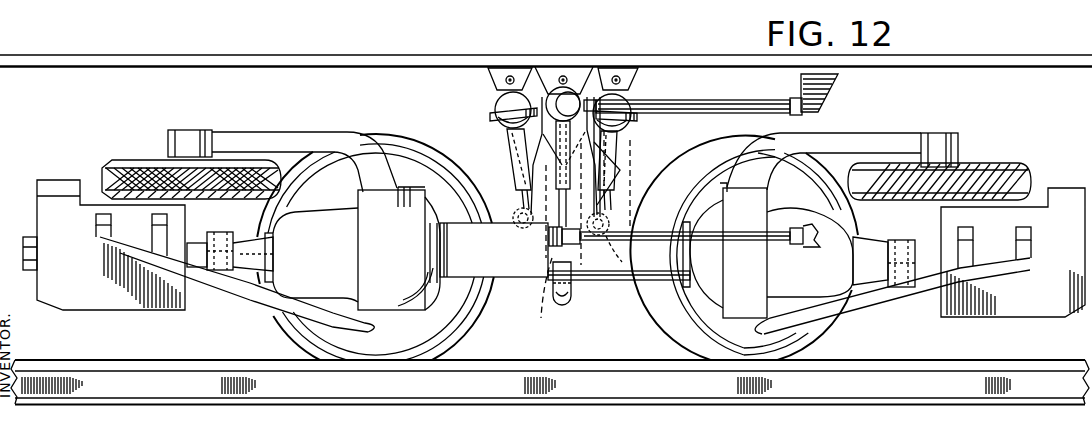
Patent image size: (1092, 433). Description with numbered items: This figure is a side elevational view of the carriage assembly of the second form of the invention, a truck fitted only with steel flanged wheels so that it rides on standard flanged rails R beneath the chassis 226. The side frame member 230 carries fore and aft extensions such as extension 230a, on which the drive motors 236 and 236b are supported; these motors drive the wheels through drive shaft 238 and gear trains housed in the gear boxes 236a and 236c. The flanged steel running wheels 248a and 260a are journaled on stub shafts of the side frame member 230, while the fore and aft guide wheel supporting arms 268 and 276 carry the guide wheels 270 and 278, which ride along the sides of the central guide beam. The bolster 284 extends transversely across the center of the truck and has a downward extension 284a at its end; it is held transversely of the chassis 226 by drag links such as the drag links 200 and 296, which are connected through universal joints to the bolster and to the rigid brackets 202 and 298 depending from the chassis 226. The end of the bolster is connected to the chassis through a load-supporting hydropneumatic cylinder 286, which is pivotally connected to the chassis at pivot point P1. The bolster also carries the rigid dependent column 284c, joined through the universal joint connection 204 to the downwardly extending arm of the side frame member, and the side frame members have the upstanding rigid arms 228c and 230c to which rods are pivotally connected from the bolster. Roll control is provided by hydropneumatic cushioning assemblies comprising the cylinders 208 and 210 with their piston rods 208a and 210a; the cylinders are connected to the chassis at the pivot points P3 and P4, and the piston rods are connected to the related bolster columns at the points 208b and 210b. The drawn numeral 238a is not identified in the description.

The chassis 226 is at (232, 58).
The flanged rails R is at (487, 385).
The drive motor 236b is at (118, 293).
The left coupling and bolt bracket 238a is at (234, 217).
The fore and aft extension 230a is at (878, 297).
The guide wheel 278 is at (148, 168).
The guide wheel supporting arm 276 is at (281, 140).
The flanged steel running wheel 260a is at (391, 143).
The gear box 236c is at (338, 262).
The piston rod 210a is at (515, 208).
The connection point 210b is at (512, 226).
The downward extension of bolster 284a is at (555, 222).
The drag link 296 is at (701, 237).
The side frame member 230 is at (588, 268).
The universal joint connection 204 is at (563, 304).
The rigid dependent column 284c is at (538, 312).
The pivot point P4 is at (507, 77).
The pivot point P1 is at (564, 76).
The pivot point P3 is at (622, 82).
The cylinder 210 is at (498, 112).
The upstanding rigid arm 228c is at (511, 176).
The bolster 284 is at (538, 80).
The cylinder 286 is at (588, 90).
The cylinder 208 is at (622, 126).
The upstanding rigid arm 230c is at (618, 176).
The piston rod 208a is at (612, 206).
The connection point 208b is at (612, 236).
The drag link 200 is at (722, 100).
The rigid bracket 202 is at (822, 88).
The guide wheel supporting arm 268 is at (862, 143).
The flanged steel running wheel 248a is at (808, 340).
The guide wheel 270 is at (975, 180).
The gear box 236a is at (833, 278).
The rigid bracket 298 is at (810, 226).
The drive shaft 238 is at (906, 244).
The drive motor 236 is at (1040, 302).